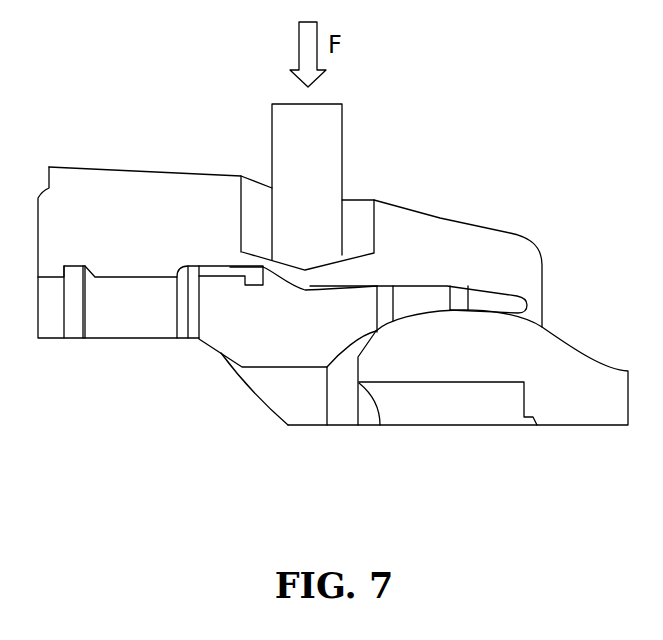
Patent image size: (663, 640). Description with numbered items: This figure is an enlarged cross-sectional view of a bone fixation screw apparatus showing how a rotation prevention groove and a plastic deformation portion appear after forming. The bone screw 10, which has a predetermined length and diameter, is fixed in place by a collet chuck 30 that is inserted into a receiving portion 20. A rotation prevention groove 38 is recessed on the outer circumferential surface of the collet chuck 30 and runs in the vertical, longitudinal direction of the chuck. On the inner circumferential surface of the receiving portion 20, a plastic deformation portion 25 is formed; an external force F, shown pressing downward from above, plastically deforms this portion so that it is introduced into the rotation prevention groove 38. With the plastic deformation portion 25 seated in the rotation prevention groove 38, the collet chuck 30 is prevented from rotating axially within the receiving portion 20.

The bone screw 10 is at (586, 405).
The receiving portion 20 is at (120, 185).
The plastic deformation portion 25 is at (313, 276).
The collet chuck 30 is at (285, 330).
The rotation prevention groove 38 is at (283, 287).